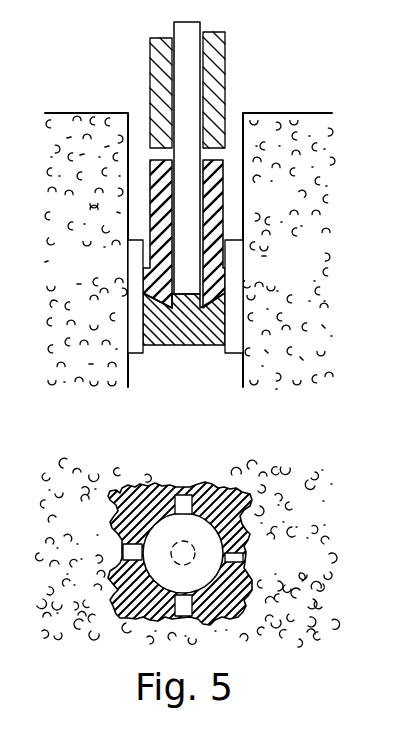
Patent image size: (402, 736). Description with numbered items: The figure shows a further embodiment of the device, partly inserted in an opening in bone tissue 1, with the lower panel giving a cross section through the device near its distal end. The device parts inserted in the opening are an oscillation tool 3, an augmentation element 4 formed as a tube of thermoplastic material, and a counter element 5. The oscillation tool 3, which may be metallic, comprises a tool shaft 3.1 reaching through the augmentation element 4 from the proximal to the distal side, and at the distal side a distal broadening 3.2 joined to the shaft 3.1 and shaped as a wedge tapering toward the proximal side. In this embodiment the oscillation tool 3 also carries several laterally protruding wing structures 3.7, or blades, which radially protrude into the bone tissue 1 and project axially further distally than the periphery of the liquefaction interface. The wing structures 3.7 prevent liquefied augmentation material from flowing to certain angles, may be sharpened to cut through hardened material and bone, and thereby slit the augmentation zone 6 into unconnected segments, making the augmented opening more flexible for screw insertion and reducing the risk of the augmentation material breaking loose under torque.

The bone tissue 1 is at (313, 122).
The oscillation tool 3 is at (174, 25).
The tool shaft 3.1 is at (188, 74).
The distal broadening 3.2 is at (177, 327).
The wing structures 3.7 is at (137, 265).
The augmentation element 4 is at (223, 200).
The counter element 5 is at (225, 62).
The augmentation zone 6 is at (118, 517).